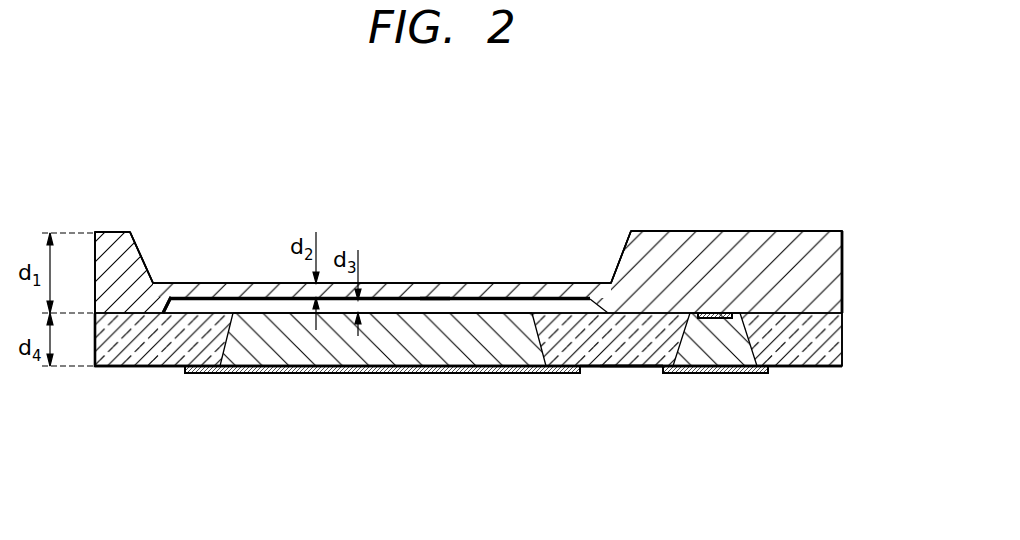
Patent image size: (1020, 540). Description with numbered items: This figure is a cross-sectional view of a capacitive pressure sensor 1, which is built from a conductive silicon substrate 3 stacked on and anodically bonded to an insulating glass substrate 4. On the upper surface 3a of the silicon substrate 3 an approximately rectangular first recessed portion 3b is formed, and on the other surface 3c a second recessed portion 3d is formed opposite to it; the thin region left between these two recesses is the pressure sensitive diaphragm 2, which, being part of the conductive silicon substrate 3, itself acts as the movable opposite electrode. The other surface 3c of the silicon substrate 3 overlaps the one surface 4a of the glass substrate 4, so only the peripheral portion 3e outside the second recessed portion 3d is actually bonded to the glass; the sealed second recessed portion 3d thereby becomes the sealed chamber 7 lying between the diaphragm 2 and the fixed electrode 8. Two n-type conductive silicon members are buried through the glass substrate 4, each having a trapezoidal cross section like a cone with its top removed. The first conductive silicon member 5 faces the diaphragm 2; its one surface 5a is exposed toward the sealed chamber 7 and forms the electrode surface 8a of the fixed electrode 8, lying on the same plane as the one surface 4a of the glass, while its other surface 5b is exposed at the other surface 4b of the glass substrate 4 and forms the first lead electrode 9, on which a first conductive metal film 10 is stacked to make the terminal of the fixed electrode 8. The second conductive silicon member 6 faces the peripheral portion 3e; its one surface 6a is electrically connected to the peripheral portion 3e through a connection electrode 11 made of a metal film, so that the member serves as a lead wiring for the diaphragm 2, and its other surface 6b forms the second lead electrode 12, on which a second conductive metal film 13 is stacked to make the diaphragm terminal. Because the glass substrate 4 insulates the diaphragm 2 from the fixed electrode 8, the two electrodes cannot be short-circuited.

The capacitive pressure sensor 1 is at (836, 154).
The pressure sensitive diaphragm 2 is at (503, 288).
The silicon substrate 3 is at (843, 261).
The surface of the silicon substrate 3a is at (118, 231).
The first recessed portion 3b is at (146, 253).
The other surface of the silicon substrate 3c is at (134, 320).
The second recessed portion 3d is at (172, 304).
The peripheral portion 3e is at (105, 307).
The glass substrate 4 is at (842, 338).
The one surface of the glass substrate 4a is at (817, 299).
The other surface of the glass substrate 4b is at (838, 369).
The first conductive silicon member 5 is at (260, 376).
The one surface of the first conductive silicon member 5a is at (280, 313).
The other surface of the first conductive silicon member 5b is at (390, 377).
The second conductive silicon member 6 is at (688, 358).
The one surface of the second conductive silicon member 6a is at (693, 310).
The other surface of the second conductive silicon member 6b is at (727, 376).
The sealed chamber 7 is at (436, 290).
The fixed electrode 8 is at (385, 264).
The electrode surface 8a is at (401, 297).
The first lead electrode 9 is at (382, 401).
The first conductive metal film 10 is at (586, 374).
The connection electrode 11 is at (717, 311).
The second lead electrode 12 is at (720, 411).
The second conductive metal film 13 is at (657, 374).